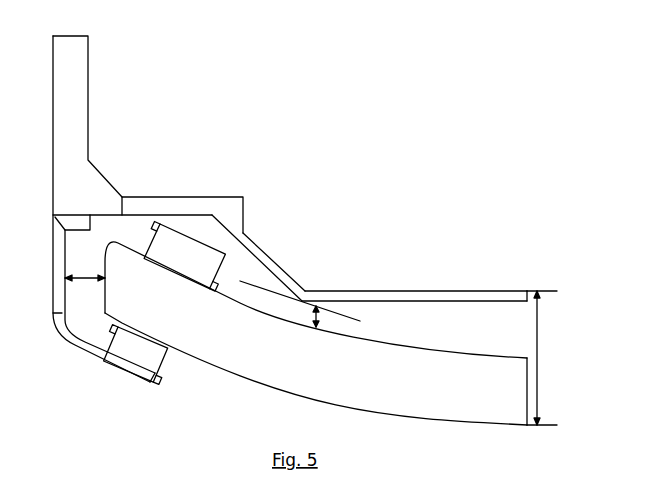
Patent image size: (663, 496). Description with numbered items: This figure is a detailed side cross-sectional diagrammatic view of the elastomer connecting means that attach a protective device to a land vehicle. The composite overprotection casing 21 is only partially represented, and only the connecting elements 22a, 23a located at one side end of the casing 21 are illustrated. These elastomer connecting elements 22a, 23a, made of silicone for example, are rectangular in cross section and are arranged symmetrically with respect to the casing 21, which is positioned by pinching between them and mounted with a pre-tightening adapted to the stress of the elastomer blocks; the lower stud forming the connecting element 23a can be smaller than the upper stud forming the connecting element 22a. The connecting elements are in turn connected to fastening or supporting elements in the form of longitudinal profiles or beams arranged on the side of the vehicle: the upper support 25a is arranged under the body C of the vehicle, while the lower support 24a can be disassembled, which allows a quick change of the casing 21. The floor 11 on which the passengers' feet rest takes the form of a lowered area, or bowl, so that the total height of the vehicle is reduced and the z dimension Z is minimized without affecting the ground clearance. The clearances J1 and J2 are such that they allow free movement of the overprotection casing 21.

The body C is at (128, 203).
The floor 11 is at (413, 291).
The casing 21 is at (262, 367).
The connecting element 22a is at (205, 260).
The connecting element 23a is at (142, 352).
The lower support 24a is at (115, 355).
The upper support 25a is at (197, 225).
The clearance J1 is at (322, 317).
The clearance J2 is at (85, 271).
The z dimension Z is at (542, 358).